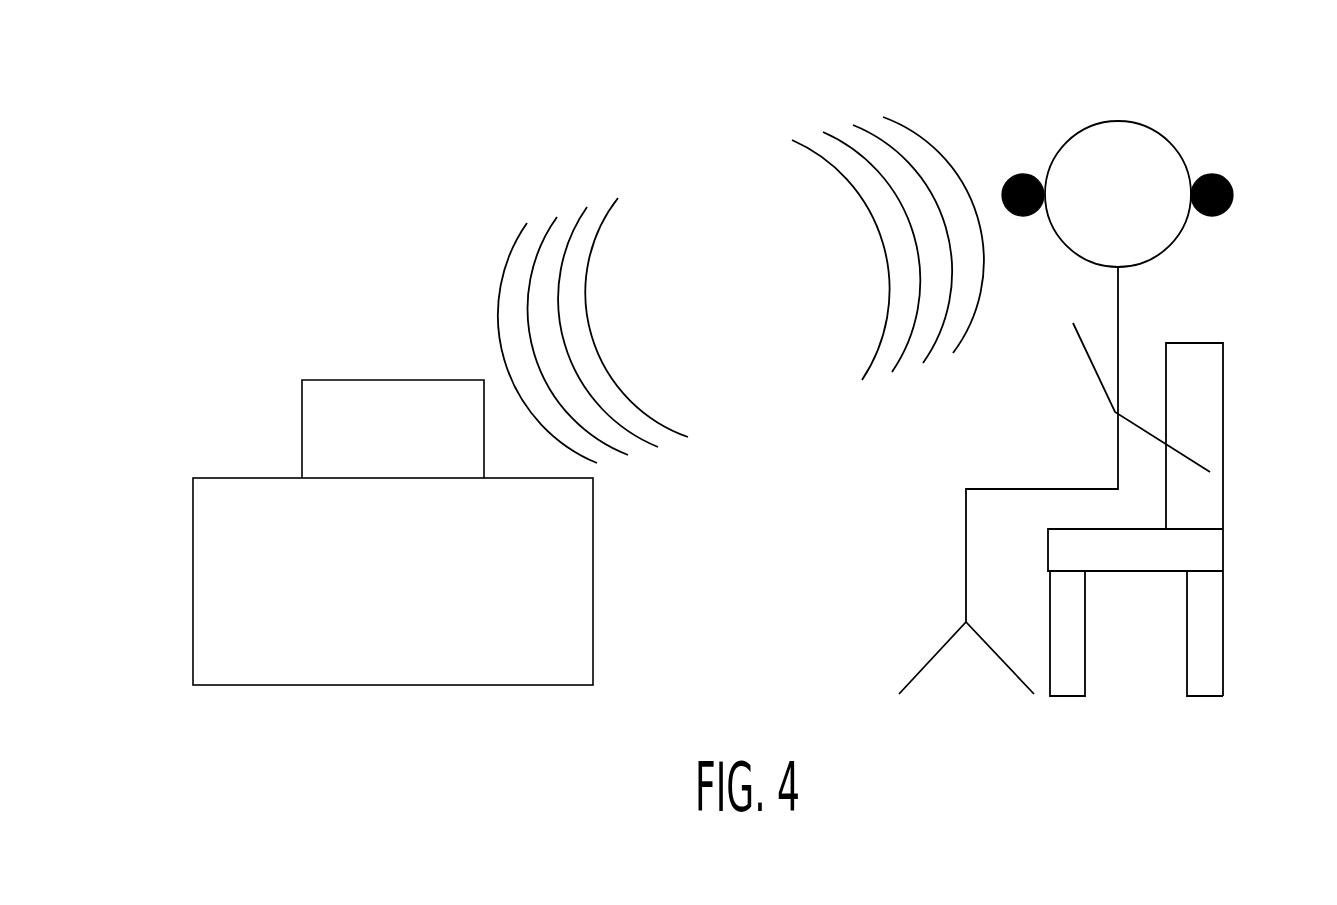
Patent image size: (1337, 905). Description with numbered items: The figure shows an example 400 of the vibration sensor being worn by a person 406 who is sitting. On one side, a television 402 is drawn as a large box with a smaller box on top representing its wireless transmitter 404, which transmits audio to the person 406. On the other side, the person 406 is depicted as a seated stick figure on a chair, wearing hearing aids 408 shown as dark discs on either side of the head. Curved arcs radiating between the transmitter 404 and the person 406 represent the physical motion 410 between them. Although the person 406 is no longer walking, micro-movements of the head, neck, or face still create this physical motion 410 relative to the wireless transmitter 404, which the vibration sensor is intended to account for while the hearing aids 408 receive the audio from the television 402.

The example 400 is at (207, 144).
The television 402 is at (593, 590).
The wireless transmitter 404 is at (302, 421).
The person 406 is at (1118, 317).
The hearing aids 408 is at (1028, 168).
The physical motion 410 is at (587, 210).